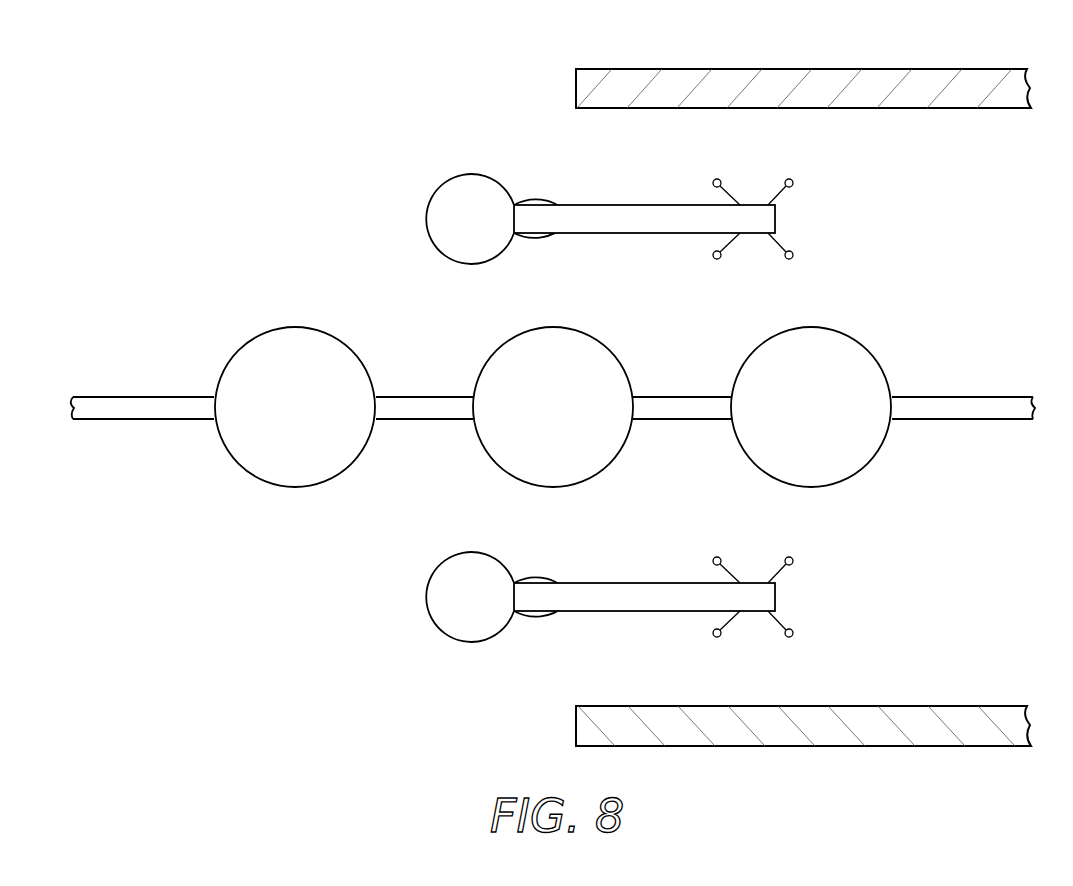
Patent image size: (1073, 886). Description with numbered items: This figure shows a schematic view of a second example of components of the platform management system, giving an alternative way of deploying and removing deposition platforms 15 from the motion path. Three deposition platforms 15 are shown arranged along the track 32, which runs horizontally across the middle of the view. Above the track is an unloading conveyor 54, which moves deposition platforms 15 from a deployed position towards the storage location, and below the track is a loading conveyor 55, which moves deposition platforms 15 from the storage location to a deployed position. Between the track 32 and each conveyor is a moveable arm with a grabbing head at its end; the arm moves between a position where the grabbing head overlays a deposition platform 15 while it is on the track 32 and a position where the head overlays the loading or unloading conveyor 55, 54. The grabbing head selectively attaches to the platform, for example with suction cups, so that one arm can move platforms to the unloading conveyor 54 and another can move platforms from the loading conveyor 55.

The unloading conveyor 54 is at (736, 82).
The loading conveyor 55 is at (736, 733).
The track 32 is at (137, 410).
The deposition platform 15 is at (295, 480).